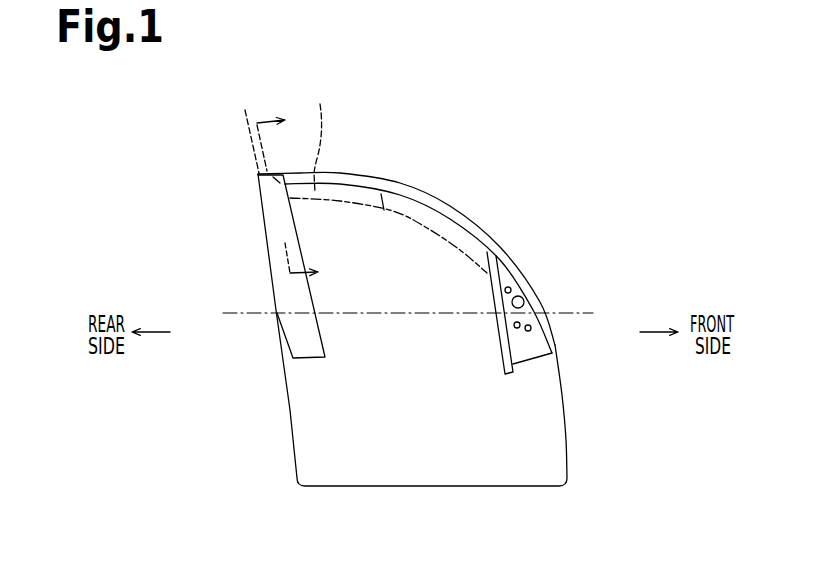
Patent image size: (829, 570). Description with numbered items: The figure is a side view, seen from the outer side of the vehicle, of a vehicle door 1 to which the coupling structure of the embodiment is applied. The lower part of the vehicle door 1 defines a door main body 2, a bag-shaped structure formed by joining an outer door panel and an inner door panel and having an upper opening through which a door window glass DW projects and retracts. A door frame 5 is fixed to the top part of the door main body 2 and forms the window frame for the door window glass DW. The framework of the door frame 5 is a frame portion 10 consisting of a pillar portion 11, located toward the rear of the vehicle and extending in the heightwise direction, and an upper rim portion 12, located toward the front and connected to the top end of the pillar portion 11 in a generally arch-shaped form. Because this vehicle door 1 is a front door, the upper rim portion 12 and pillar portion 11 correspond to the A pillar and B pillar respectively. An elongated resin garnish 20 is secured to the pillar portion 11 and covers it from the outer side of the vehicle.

The vehicle door 1 is at (555, 393).
The door main body 2 is at (567, 430).
The door frame 5 is at (467, 192).
The frame portion 10 is at (333, 82).
The pillar portion 11 is at (246, 129).
The upper rim portion 12 is at (316, 139).
The garnish 20 is at (276, 269).
The door window glass DW is at (392, 187).